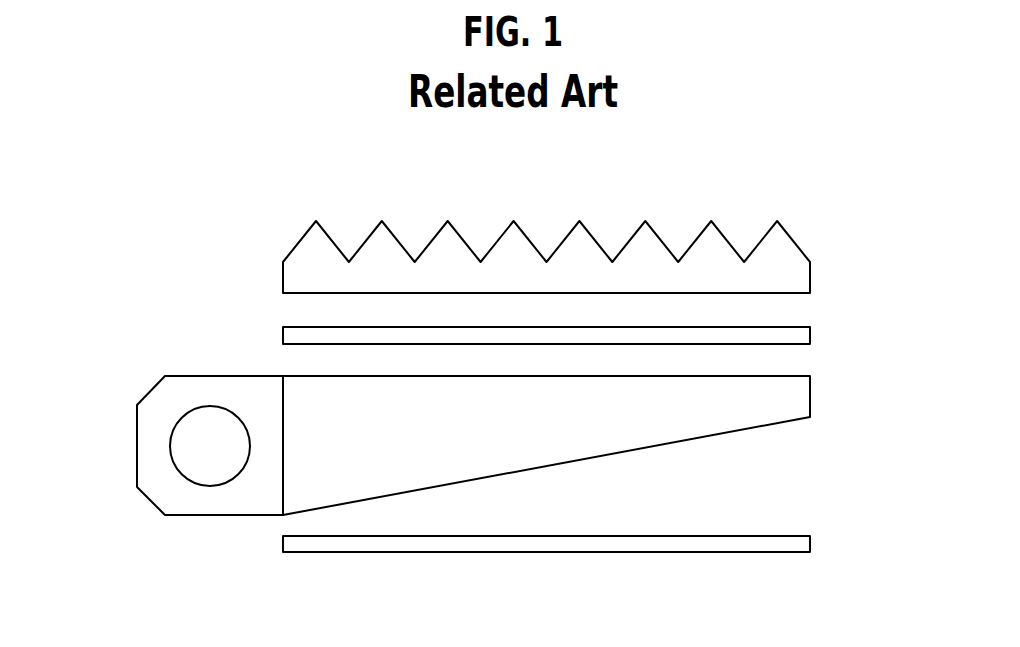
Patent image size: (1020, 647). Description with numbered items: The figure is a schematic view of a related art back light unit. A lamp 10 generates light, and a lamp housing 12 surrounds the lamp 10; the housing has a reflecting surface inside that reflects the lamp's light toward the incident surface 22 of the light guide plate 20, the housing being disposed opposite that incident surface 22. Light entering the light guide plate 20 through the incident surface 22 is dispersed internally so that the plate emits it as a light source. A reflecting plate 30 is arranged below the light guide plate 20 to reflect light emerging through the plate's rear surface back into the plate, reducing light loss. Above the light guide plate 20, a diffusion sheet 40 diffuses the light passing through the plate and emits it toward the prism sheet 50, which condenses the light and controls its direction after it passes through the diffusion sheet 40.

The lamp 10 is at (208, 415).
The lamp housing 12 is at (137, 445).
The light guide plate 20 is at (801, 389).
The incident surface 22 is at (283, 448).
The reflecting plate 30 is at (801, 548).
The diffusion sheet 40 is at (801, 337).
The prism sheet 50 is at (801, 279).